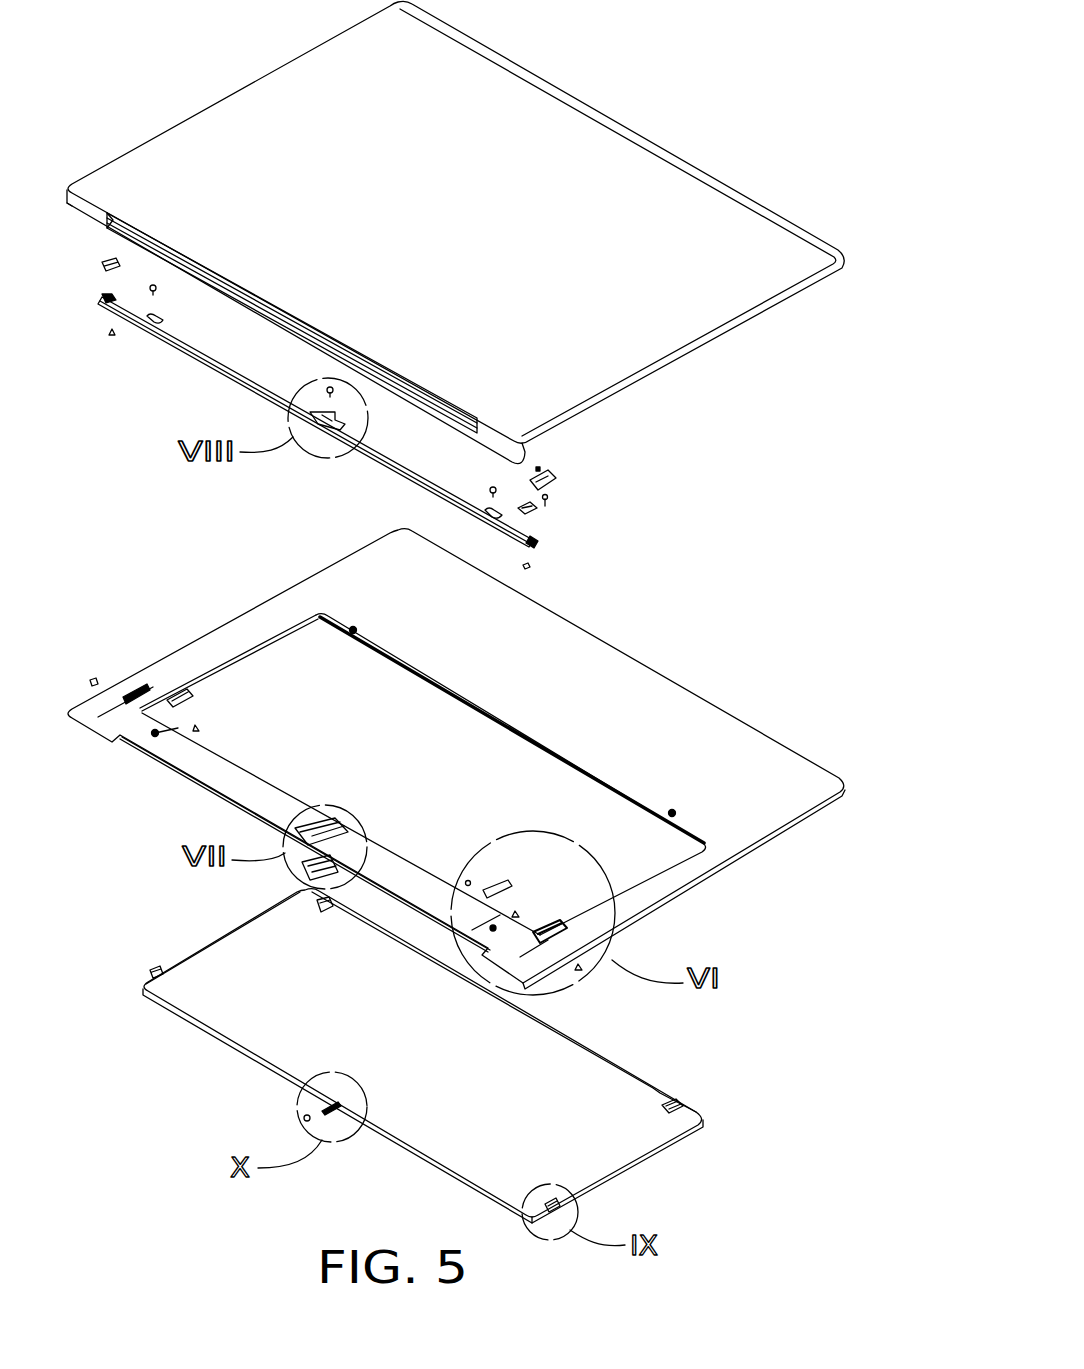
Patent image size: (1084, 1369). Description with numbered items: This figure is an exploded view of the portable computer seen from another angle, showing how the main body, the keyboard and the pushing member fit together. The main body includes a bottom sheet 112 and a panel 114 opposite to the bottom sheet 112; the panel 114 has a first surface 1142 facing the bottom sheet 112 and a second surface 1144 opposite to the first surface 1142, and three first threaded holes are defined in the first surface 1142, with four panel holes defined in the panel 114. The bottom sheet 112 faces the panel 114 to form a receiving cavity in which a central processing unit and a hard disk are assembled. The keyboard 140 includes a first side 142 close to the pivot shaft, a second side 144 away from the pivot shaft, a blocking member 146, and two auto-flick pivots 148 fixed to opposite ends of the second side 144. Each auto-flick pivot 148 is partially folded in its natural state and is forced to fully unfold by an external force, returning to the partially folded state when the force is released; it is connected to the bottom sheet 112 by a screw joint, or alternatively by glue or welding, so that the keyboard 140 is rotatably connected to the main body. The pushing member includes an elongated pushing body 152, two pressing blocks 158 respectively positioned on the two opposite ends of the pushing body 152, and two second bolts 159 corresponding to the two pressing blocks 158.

The bottom sheet 112 is at (635, 222).
The panel 114 is at (497, 759).
The first surface 1142 is at (732, 753).
The second surface 1144 is at (771, 840).
The keyboard 140 is at (434, 1056).
The first side 142 is at (215, 1012).
The second side 144 is at (578, 1060).
The blocking member 146 is at (288, 1110).
The auto-flick pivot 148 is at (680, 1110).
The pushing body 152 is at (203, 352).
The pressing block 158 is at (530, 510).
The second bolt 159 is at (528, 565).